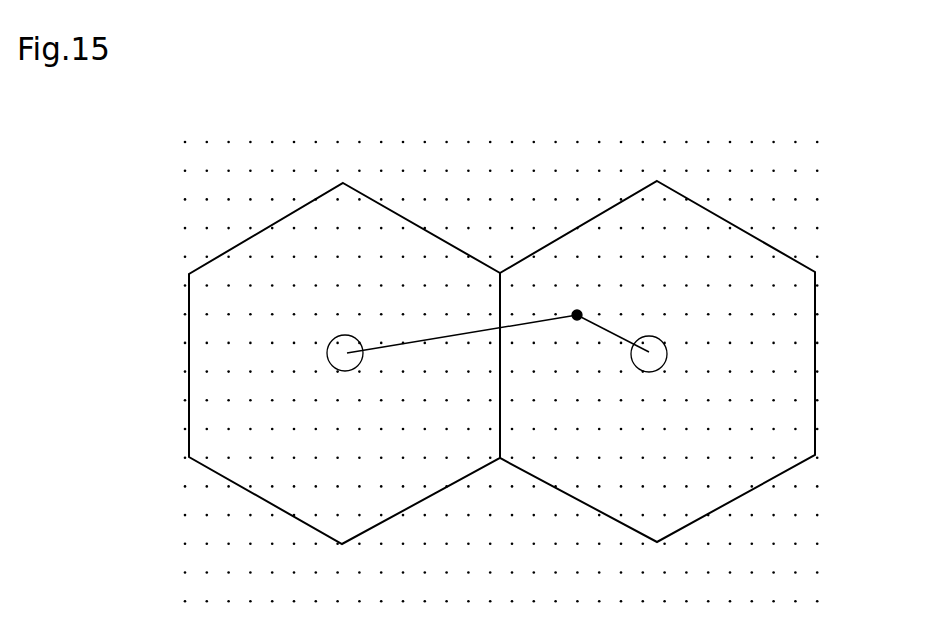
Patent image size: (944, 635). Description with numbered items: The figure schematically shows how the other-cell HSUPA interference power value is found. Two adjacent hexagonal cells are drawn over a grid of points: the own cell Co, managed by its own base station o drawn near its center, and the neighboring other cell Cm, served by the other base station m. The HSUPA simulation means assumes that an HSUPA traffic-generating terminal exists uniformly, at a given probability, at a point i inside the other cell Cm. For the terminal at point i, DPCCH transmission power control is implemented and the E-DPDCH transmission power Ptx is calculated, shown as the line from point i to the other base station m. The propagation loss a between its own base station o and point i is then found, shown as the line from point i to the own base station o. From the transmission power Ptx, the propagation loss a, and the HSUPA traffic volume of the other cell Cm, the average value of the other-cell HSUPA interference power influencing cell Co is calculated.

The own base station o is at (327, 357).
The other base station m is at (667, 360).
The point i is at (580, 311).
The own cell Co is at (229, 482).
The other cell Cm is at (799, 490).
The propagation loss a is at (447, 338).
The E-DPDCH transmission power Ptx is at (603, 300).